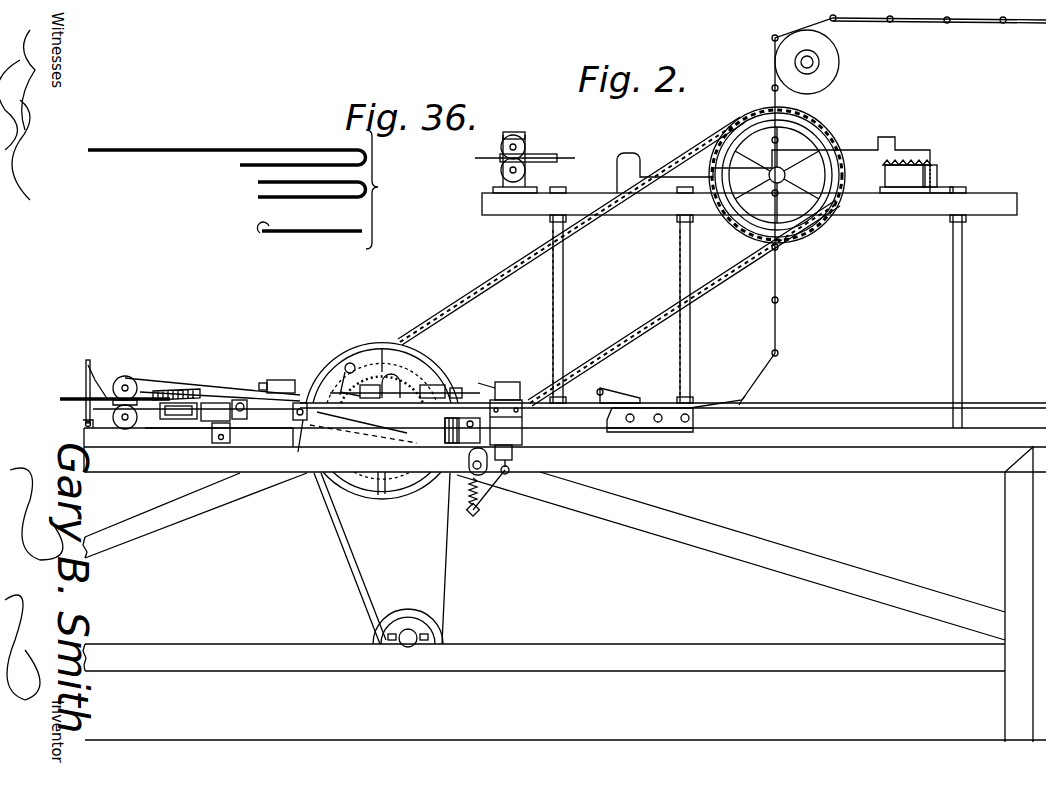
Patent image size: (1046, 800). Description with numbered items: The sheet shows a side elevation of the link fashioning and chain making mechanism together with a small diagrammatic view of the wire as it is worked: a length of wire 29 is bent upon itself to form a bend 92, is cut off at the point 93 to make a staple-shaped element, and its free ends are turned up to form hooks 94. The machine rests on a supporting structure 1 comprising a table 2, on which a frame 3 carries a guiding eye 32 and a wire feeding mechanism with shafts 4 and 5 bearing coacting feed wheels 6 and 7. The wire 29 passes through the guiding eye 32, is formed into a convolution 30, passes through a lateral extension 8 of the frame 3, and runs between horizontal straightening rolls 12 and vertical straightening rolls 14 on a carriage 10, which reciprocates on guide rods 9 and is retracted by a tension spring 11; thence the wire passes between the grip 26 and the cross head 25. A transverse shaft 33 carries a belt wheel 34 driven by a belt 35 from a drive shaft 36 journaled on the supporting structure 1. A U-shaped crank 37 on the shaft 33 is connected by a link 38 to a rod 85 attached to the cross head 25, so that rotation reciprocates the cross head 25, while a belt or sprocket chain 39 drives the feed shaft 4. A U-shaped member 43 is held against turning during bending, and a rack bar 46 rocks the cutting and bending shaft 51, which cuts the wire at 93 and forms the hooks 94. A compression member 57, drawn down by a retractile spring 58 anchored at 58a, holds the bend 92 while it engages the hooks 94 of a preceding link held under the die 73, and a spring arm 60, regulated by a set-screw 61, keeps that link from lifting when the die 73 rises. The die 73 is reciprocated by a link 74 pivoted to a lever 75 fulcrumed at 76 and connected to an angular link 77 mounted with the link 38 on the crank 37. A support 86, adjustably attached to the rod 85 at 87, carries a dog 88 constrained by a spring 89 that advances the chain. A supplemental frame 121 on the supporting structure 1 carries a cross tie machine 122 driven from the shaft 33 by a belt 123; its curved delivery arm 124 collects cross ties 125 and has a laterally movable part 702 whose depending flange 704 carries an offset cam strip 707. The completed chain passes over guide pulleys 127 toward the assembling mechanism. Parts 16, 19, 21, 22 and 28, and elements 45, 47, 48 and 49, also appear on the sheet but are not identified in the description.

In FIG. 2, the supporting structure 1 is at (124, 544).
In FIG. 2, the table 2 is at (150, 440).
In FIG. 2, the frame 3 is at (178, 448).
In FIG. 2, the shaft 4 is at (128, 380).
In FIG. 2, the shaft 5 is at (118, 412).
In FIG. 2, the feed wheel 6 is at (117, 378).
In FIG. 2, the feed wheel 7 is at (125, 420).
In FIG. 2, the lateral extension 8 is at (152, 380).
In FIG. 2, the guide rods 9 is at (185, 412).
In FIG. 2, the carriage 10 is at (165, 393).
In FIG. 2, the tension spring 11 is at (220, 402).
In FIG. 2, the horizontal straightening rolls 12 is at (187, 450).
In FIG. 2, the vertical straightening rolls 14 is at (238, 400).
In FIG. 2, the guide block 16 is at (236, 430).
In FIG. 2, the pin 19 is at (236, 398).
In FIG. 2, the clamp 21 is at (210, 402).
In FIG. 2, the post 22 is at (88, 365).
In FIG. 2, the cross head 25 is at (298, 440).
In FIG. 2, the grip 26 is at (280, 385).
In FIG. 2, the nut 28 is at (265, 383).
In FIG. 36, the wire 29 is at (135, 151).
In FIG. 2, the wire 29 is at (70, 397).
In FIG. 2, the convolution 30 is at (80, 410).
In FIG. 2, the guiding eye 32 is at (108, 400).
In FIG. 2, the shaft 33 is at (393, 421).
In FIG. 2, the belt wheel 34 is at (408, 385).
In FIG. 2, the belt 35 is at (448, 577).
In FIG. 2, the drive shaft 36 is at (408, 647).
In FIG. 2, the U-shaped crank 37 is at (347, 447).
In FIG. 2, the link 38 is at (300, 403).
In FIG. 2, the belt or sprocket chain 39 is at (290, 404).
In FIG. 2, the U-shaped member 43 is at (440, 380).
In FIG. 2, the bearing block 45 is at (455, 385).
In FIG. 2, the rack bar 46 is at (370, 384).
In FIG. 2, the collar 47 is at (398, 382).
In FIG. 2, the hub arch 48 is at (388, 376).
In FIG. 2, the pin 49 is at (391, 372).
In FIG. 2, the cutting and bending shaft 51 is at (490, 383).
In FIG. 2, the compression member 57 is at (505, 385).
In FIG. 2, the retractile spring 58 is at (476, 512).
In FIG. 2, the spring connection 58a is at (495, 508).
In FIG. 2, the spring arm 60 is at (515, 382).
In FIG. 2, the set-screw 61 is at (455, 388).
In FIG. 2, the die 73 is at (512, 387).
In FIG. 2, the link 74 is at (515, 455).
In FIG. 2, the lever 75 is at (440, 455).
In FIG. 2, the fulcrum 76 is at (447, 467).
In FIG. 2, the angular link 77 is at (348, 364).
In FIG. 2, the rod 85 is at (343, 390).
In FIG. 2, the support 86 is at (600, 392).
In FIG. 2, the adjustable attachment 87 is at (600, 408).
In FIG. 2, the dog 88 is at (630, 392).
In FIG. 2, the spring 89 is at (692, 405).
In FIG. 36, the bend 92 is at (361, 148).
In FIG. 36, the cut-off point 93 is at (247, 149).
In FIG. 36, the hooks 94 is at (262, 232).
In FIG. 2, the supplemental frame 121 is at (993, 205).
In FIG. 2, the cross tie machine 122 is at (848, 157).
In FIG. 2, the belt 123 is at (571, 231).
In FIG. 2, the curved delivery arm 124 is at (902, 160).
In FIG. 2, the cross ties 125 is at (937, 172).
In FIG. 2, the guide pulleys 127 is at (825, 52).
In FIG. 2, the laterally movable part 702 is at (915, 160).
In FIG. 2, the depending flange 704 is at (900, 172).
In FIG. 2, the offset cam strip 707 is at (920, 190).